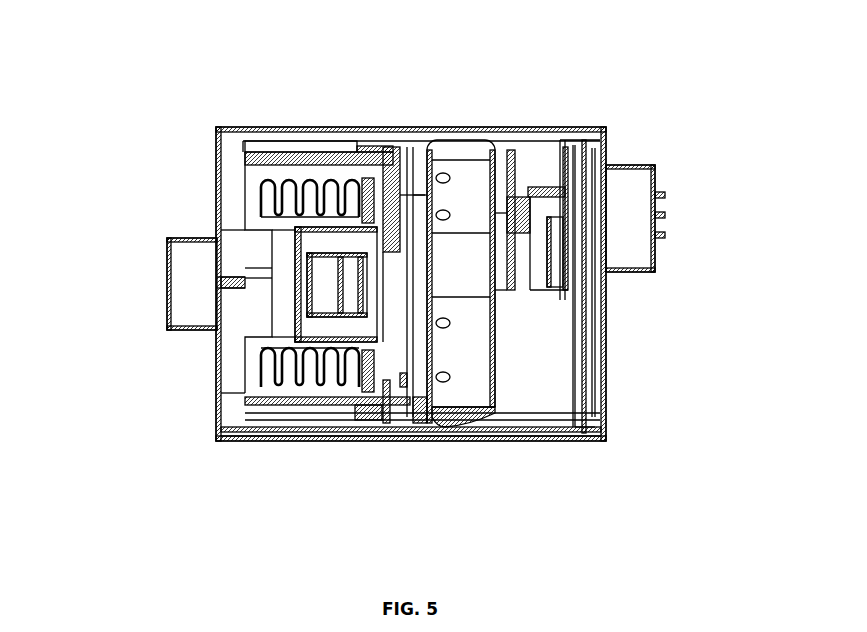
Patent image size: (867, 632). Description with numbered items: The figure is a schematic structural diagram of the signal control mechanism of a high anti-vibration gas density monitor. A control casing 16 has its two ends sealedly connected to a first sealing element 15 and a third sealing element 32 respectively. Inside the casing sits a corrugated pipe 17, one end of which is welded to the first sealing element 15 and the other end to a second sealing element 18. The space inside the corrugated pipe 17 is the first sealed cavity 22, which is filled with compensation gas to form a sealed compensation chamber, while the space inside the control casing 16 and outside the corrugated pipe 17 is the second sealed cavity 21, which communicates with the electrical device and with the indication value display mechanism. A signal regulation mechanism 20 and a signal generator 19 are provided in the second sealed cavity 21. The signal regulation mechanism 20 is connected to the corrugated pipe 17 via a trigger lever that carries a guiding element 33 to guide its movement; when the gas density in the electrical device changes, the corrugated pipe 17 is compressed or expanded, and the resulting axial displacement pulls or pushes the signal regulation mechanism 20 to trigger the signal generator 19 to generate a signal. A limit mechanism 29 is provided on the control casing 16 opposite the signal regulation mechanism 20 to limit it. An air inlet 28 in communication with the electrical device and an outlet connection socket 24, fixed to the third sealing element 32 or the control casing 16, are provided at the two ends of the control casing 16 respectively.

The first sealing element 15 is at (235, 385).
The control casing 16 is at (277, 440).
The corrugated pipe 17 is at (277, 350).
The second sealing element 18 is at (372, 392).
The signal generator 19 is at (460, 365).
The signal regulation mechanism 20 is at (517, 280).
The second sealed cavity 21 is at (245, 165).
The first sealed cavity 22 is at (262, 250).
The outlet connection socket 24 is at (635, 248).
The air inlet 28 is at (200, 308).
The limit mechanism 29 is at (560, 290).
The third sealing element 32 is at (605, 130).
The guiding element 33 is at (395, 280).